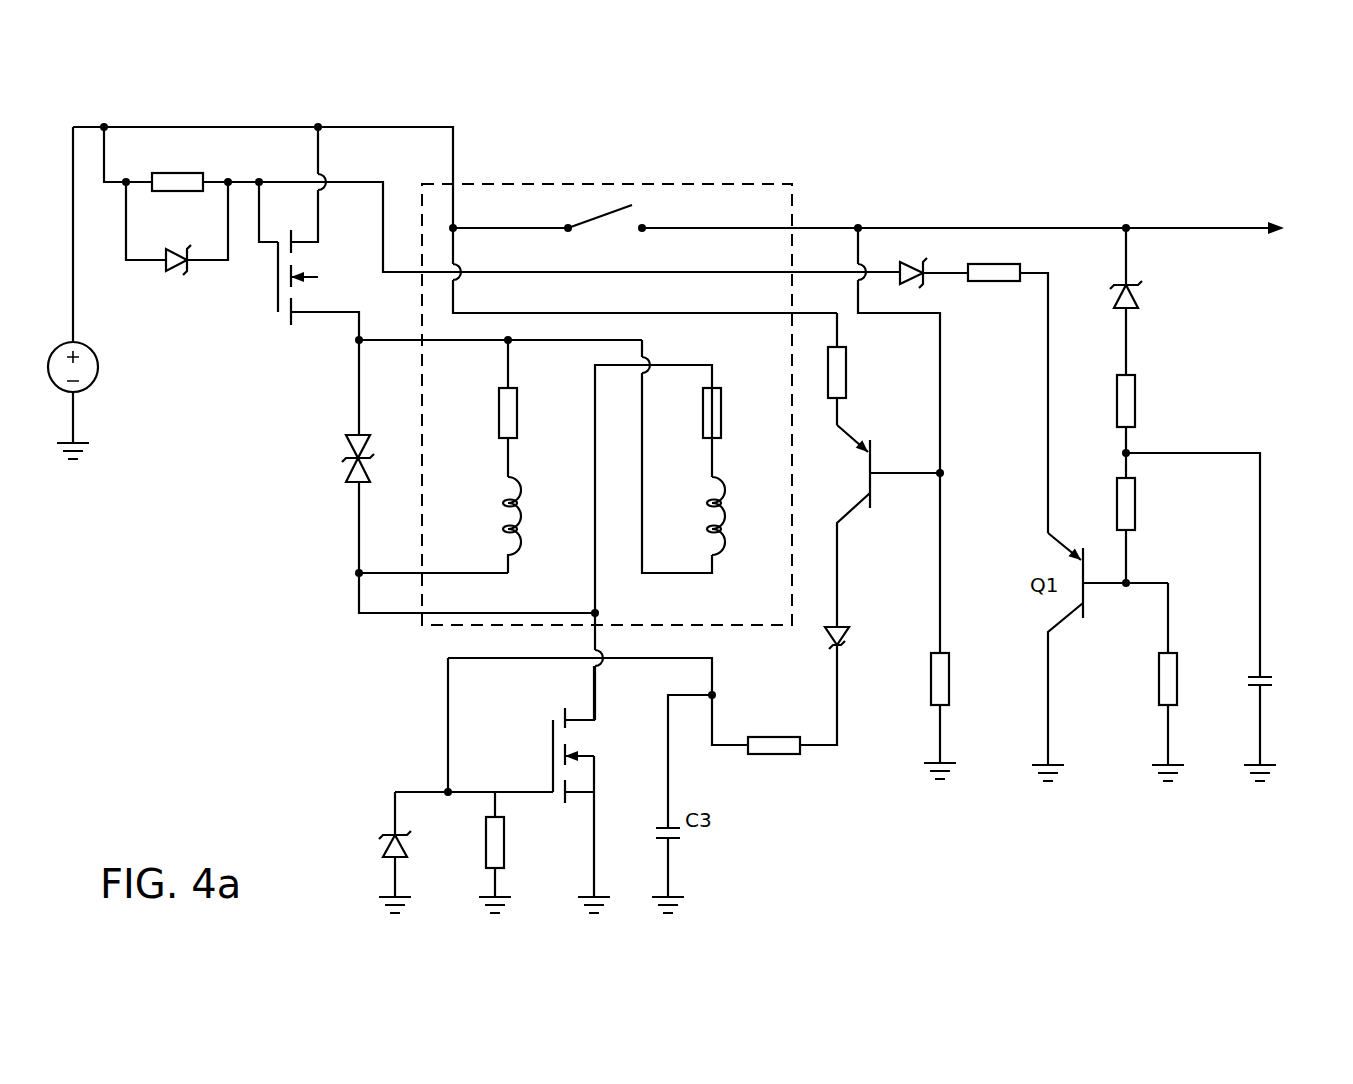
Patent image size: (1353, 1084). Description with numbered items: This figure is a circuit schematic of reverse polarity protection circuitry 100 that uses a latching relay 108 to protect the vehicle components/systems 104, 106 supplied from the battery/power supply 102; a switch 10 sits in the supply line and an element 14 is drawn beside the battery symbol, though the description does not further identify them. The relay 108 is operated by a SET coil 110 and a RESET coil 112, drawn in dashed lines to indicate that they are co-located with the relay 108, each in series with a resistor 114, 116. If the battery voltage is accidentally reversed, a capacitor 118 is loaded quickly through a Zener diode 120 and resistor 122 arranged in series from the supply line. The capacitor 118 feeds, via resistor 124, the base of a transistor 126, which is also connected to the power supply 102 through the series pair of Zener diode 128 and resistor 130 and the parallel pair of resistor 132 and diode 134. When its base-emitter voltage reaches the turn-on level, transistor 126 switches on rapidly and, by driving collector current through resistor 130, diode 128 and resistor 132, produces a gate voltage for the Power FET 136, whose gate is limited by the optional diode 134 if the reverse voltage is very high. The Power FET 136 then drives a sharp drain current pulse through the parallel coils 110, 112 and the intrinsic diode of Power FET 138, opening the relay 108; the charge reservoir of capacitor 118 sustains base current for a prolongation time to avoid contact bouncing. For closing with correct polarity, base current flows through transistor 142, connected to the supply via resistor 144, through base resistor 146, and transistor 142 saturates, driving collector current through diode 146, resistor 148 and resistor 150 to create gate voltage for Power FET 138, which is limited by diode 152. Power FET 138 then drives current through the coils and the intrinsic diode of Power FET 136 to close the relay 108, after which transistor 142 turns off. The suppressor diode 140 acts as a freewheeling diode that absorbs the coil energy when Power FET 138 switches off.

The ignition switch 10 is at (597, 219).
The battery 14 is at (83, 425).
The reverse polarity protection circuitry 100 is at (735, 160).
The battery/power supply 102 is at (98, 372).
The vehicle components/systems 104 is at (1227, 214).
The vehicle components/systems 106 is at (1296, 238).
The latching relay 108 is at (792, 184).
The SET coil 110 is at (502, 518).
The RESET coil 112 is at (705, 518).
The resistor 114 is at (498, 414).
The resistor 116 is at (718, 388).
The capacitor 118 is at (1252, 688).
The Zener diode 120 is at (1140, 301).
The resistor 122 is at (1137, 410).
The resistor 124 is at (1137, 518).
The transistor 126 is at (1157, 690).
The Zener diode 128 is at (918, 270).
The resistor 130 is at (1020, 268).
The resistor 132 is at (198, 172).
The diode 134 is at (182, 266).
The Power FET 136 is at (278, 298).
The Power FET 138 is at (552, 767).
The suppressor diode 140 is at (347, 468).
The transistor 142 is at (860, 500).
The resistor 144 is at (845, 400).
The base resistor and diode 146 is at (850, 640).
The resistor 148 is at (782, 755).
The resistor 150 is at (482, 838).
The diode 152 is at (382, 838).